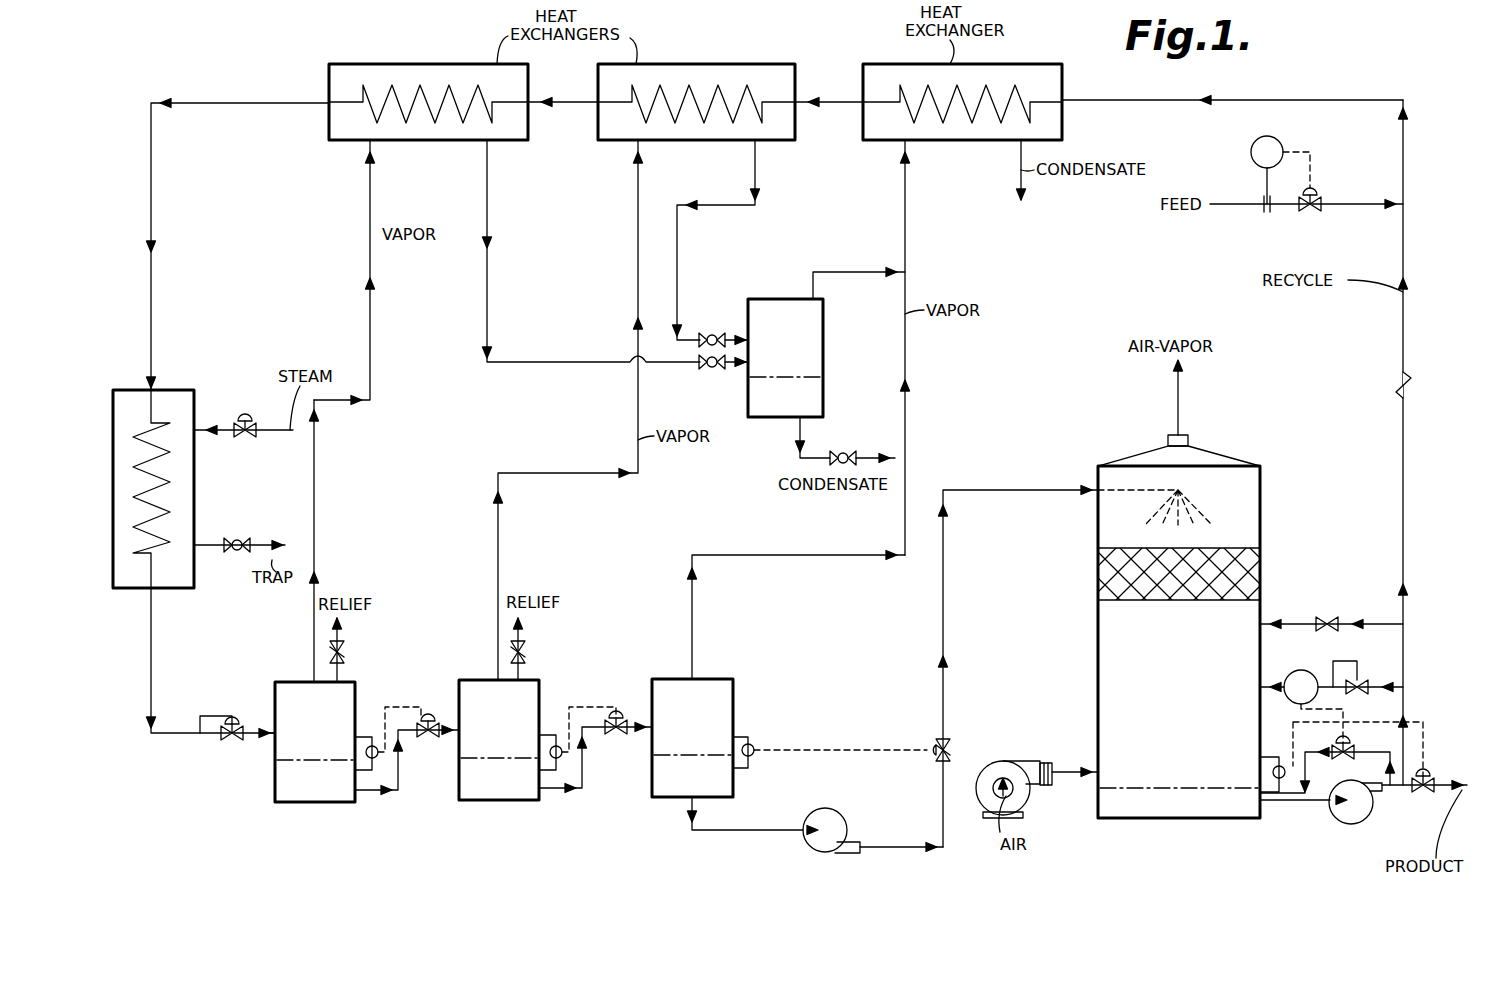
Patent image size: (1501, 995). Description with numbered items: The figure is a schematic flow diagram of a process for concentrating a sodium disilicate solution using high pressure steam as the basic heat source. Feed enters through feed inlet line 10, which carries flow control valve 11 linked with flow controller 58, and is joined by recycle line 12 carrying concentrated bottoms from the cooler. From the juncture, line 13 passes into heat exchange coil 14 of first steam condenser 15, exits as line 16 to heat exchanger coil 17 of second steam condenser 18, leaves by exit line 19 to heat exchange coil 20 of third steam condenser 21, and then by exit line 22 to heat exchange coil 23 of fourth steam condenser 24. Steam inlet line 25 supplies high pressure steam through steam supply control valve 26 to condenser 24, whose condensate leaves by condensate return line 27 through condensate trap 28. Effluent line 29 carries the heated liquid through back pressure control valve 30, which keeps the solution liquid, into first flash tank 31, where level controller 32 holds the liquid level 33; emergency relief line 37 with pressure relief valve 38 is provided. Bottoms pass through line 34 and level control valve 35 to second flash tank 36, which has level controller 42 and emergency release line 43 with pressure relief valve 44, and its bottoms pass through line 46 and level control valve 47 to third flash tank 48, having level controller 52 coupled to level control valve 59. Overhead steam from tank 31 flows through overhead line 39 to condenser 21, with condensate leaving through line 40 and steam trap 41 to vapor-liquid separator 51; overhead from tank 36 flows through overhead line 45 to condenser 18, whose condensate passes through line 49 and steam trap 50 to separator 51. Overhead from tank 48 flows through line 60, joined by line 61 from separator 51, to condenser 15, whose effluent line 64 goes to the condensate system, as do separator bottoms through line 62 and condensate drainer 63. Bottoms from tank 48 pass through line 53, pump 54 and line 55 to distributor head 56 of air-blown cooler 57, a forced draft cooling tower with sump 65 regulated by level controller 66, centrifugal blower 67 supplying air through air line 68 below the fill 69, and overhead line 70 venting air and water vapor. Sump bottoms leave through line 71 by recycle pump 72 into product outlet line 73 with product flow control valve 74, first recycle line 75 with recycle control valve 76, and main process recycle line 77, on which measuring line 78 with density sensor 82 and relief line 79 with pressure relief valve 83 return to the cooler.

The feed inlet line 10 is at (1240, 200).
The flow control valve 11 is at (1312, 212).
The recycle line 12 is at (1403, 326).
The line 13 is at (1304, 98).
The heat exchange coil 14 is at (983, 80).
The first steam condenser 15 is at (912, 64).
The line 16 is at (842, 100).
The heat exchanger coil 17 is at (705, 84).
The second steam condenser 18 is at (635, 64).
The exit line 19 is at (577, 98).
The heat exchange coil 20 is at (410, 82).
The third steam condenser 21 is at (340, 64).
The exit line 22 is at (208, 103).
The heat exchange coil 23 is at (180, 412).
The fourth steam condenser 24 is at (194, 486).
The steam inlet line 25 is at (280, 436).
The steam supply control valve 26 is at (245, 418).
The condensate return line 27 is at (210, 548).
The condensate trap 28 is at (234, 538).
The effluent line 29 is at (151, 644).
The back pressure control valve 30 is at (236, 722).
The first flash tank 31 is at (275, 752).
The level controller 32 is at (374, 746).
The liquid level 33 is at (318, 756).
The line 34 is at (372, 790).
The level control valve 35 is at (430, 740).
The second flash tank 36 is at (459, 692).
The emergency relief line 37 is at (340, 632).
The pressure relief valve 38 is at (344, 650).
The overhead line 39 is at (314, 508).
The line 40 is at (487, 190).
The steam trap 41 is at (716, 368).
The level controller 42 is at (560, 746).
The emergency release line 43 is at (522, 632).
The pressure relief valve 44 is at (526, 650).
The overhead line 45 is at (578, 480).
The line 46 is at (560, 790).
The level control valve 47 is at (618, 738).
The third flash tank 48 is at (652, 688).
The line 49 is at (768, 172).
The steam trap 50 is at (722, 334).
The vapor-liquid separator 51 is at (782, 299).
The level controller 52 is at (752, 745).
The line 53 is at (756, 834).
The pump 54 is at (834, 853).
The line 55 is at (943, 606).
The distributor head 56 is at (1180, 490).
The air-blown cooler 57 is at (1098, 526).
The flow controller 58 is at (1280, 142).
The level control valve 59 is at (952, 744).
The line 60 is at (808, 555).
The line 61 is at (862, 272).
The line 62 is at (800, 436).
The condensate drainer 63 is at (836, 450).
The effluent line 64 is at (1021, 170).
The sump 65 is at (1182, 786).
The level controller 66 is at (1272, 770).
The centrifugal blower 67 is at (1000, 762).
The air line 68 is at (1062, 772).
The fill 69 is at (1212, 600).
The overhead line 70 is at (1178, 406).
The line 71 is at (1304, 804).
The recycle pump 72 is at (1368, 816).
The product outlet line 73 is at (1448, 790).
The product flow control valve 74 is at (1430, 774).
The first recycle line 75 is at (1352, 754).
The recycle control valve 76 is at (1340, 762).
The main process recycle line 77 is at (1403, 698).
The measuring line 78 is at (1392, 682).
The relief line 79 is at (1386, 620).
The density sensor 82 is at (1292, 670).
The pressure relief valve 83 is at (1342, 600).